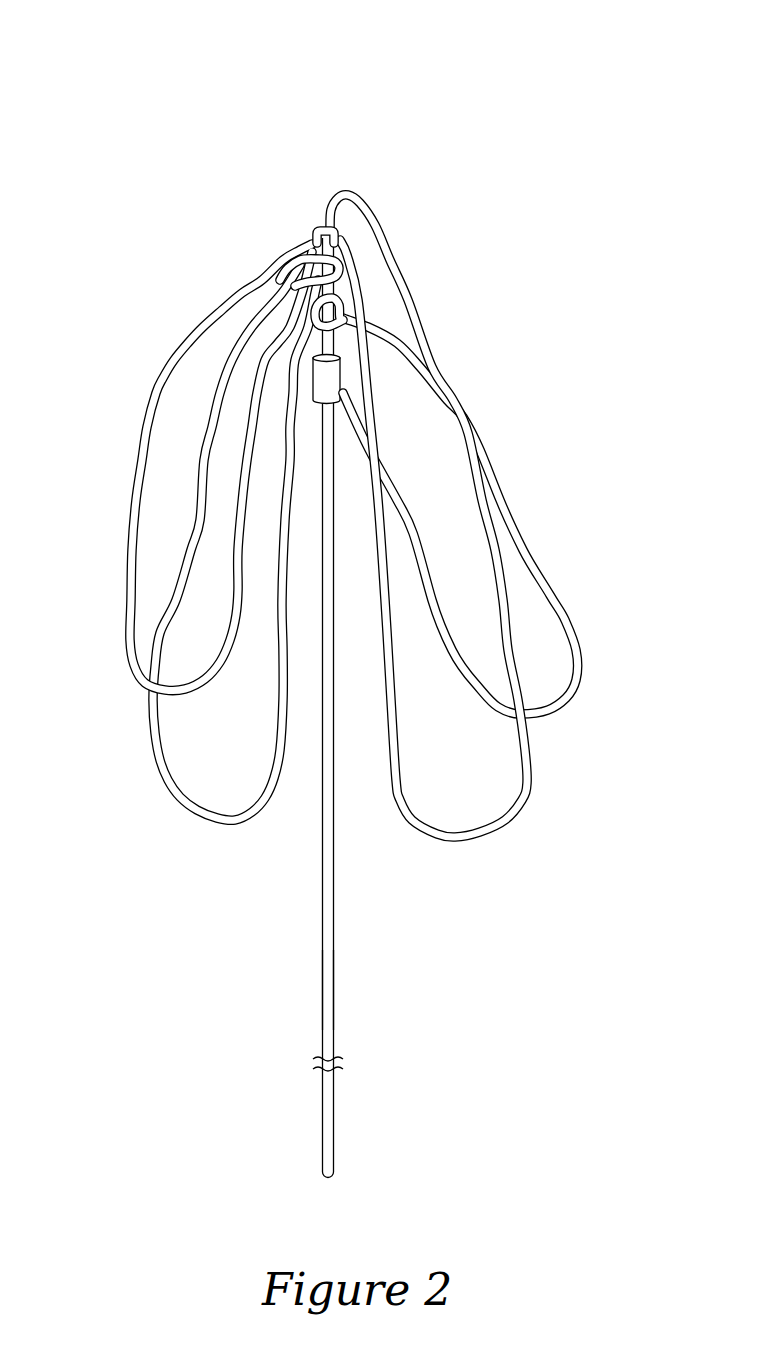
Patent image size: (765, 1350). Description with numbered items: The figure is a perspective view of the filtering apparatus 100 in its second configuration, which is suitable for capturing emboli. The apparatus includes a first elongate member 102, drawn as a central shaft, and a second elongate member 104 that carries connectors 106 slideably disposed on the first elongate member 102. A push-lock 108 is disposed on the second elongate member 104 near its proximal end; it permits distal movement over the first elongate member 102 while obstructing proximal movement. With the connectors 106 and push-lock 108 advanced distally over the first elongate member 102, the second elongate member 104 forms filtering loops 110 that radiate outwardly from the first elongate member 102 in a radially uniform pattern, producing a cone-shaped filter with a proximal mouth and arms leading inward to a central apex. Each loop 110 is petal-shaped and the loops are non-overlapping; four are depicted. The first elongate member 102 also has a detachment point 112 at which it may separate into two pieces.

The filtering apparatus 100 is at (218, 72).
The first elongate member 102 is at (322, 887).
The second elongate member 104 is at (137, 462).
The connectors 106 is at (313, 231).
The push-lock 108 is at (318, 380).
The filtering loops 110 is at (127, 641).
The detachment point 112 is at (322, 984).